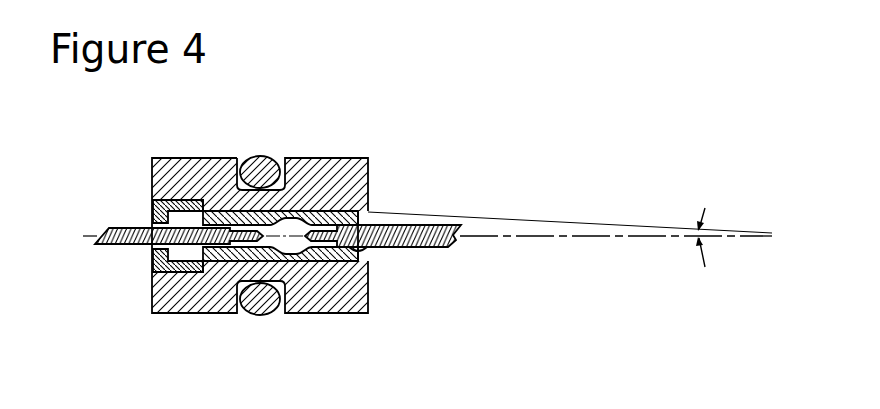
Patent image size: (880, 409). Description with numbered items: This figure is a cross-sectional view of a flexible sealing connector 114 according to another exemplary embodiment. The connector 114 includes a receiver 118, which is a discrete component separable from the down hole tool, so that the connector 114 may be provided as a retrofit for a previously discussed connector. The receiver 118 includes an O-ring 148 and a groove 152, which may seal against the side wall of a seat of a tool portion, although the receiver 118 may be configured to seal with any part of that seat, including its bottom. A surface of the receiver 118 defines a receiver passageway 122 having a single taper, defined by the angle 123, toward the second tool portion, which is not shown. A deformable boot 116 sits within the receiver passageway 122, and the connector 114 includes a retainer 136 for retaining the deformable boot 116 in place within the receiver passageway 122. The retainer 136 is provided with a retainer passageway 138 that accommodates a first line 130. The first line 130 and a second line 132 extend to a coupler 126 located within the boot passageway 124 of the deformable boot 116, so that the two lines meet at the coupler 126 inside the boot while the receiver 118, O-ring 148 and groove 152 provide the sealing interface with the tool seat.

The connector 114 is at (138, 142).
The deformable boot 116 is at (348, 206).
The receiver 118 is at (207, 165).
The receiver passageway 122 is at (302, 220).
The angle 123 is at (697, 233).
The boot passageway 124 is at (350, 238).
The coupler 126 is at (283, 239).
The first line 130 is at (123, 228).
The second line 132 is at (405, 233).
The retainer 136 is at (152, 262).
The retainer passageway 138 is at (150, 250).
The O-ring 148 is at (265, 168).
The groove 152 is at (283, 298).